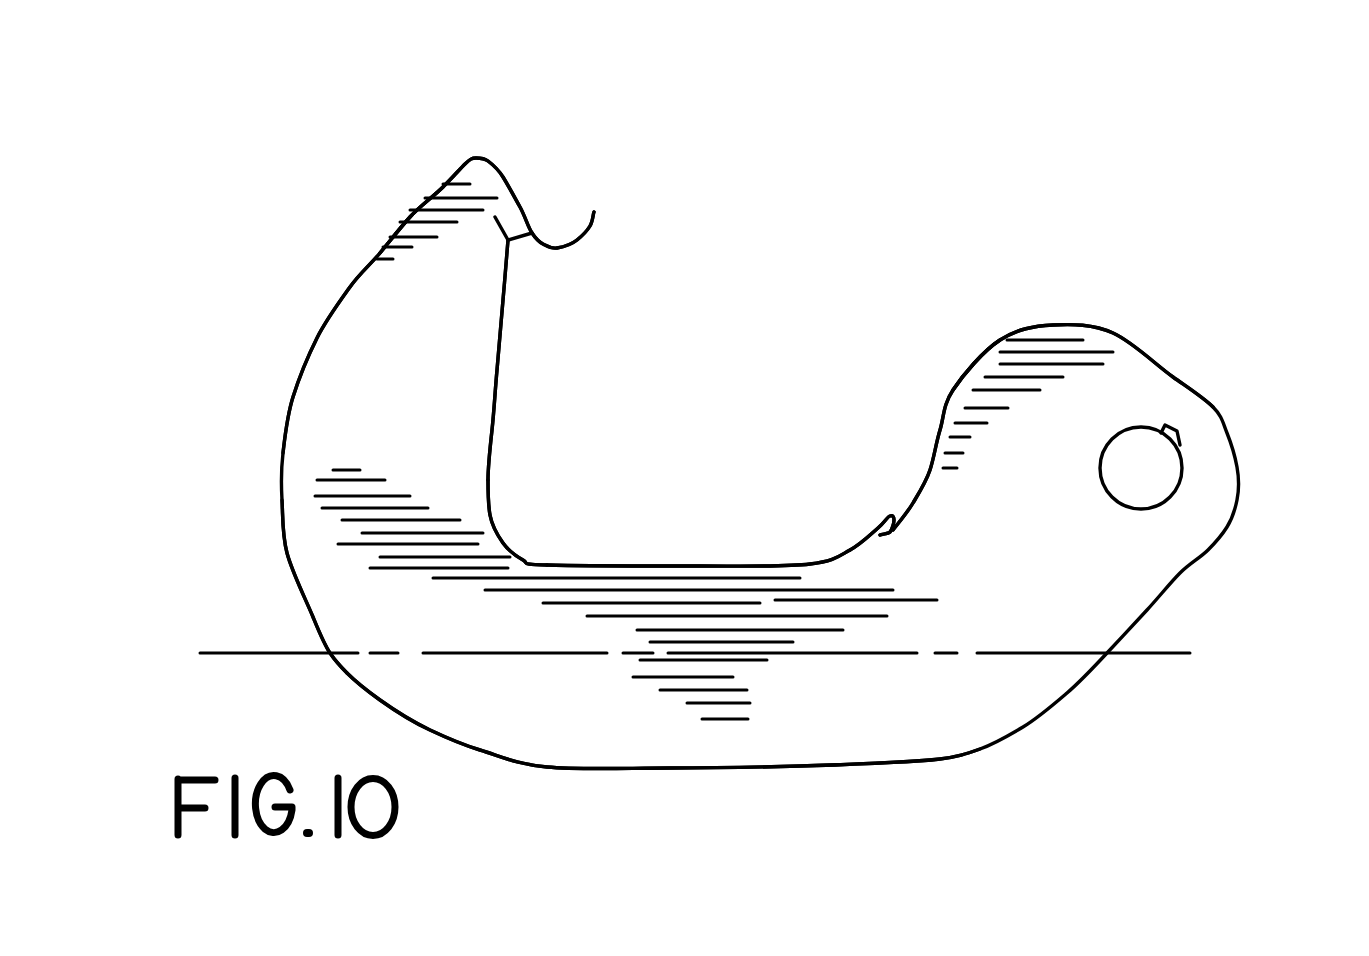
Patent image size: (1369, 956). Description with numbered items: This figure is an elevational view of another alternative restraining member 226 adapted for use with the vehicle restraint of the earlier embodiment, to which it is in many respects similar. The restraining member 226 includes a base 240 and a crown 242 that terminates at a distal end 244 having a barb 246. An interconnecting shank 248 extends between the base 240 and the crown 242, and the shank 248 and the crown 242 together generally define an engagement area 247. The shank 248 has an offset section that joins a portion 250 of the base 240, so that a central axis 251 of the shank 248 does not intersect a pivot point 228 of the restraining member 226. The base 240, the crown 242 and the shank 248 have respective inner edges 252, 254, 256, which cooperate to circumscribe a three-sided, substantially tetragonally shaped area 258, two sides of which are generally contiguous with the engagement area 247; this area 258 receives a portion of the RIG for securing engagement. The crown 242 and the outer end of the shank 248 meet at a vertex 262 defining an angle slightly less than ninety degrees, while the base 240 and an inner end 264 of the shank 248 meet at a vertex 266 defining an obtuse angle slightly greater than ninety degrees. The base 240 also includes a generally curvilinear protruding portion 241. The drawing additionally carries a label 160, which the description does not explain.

The restraining member 226 is at (872, 215).
The base 240 is at (1160, 592).
The engagement area 247 is at (462, 512).
The barb 246 is at (587, 210).
The distal end 244 is at (471, 159).
The crown 242 is at (317, 338).
The inner edge 256 is at (497, 370).
The vertex 262 is at (513, 543).
The inner edge 254 is at (703, 560).
The vertex 266 is at (892, 513).
The inner edge 252 is at (940, 418).
The portion of the base 250 is at (1130, 345).
The curvilinear protruding portion 241 is at (993, 343).
The inner end of the shank 264 is at (865, 585).
The pivot point 228 is at (1180, 452).
The sidewall 160 is at (328, 580).
The shank 248 is at (700, 748).
The central axis 251 is at (880, 653).
The tetragonally shaped area 258 is at (723, 345).